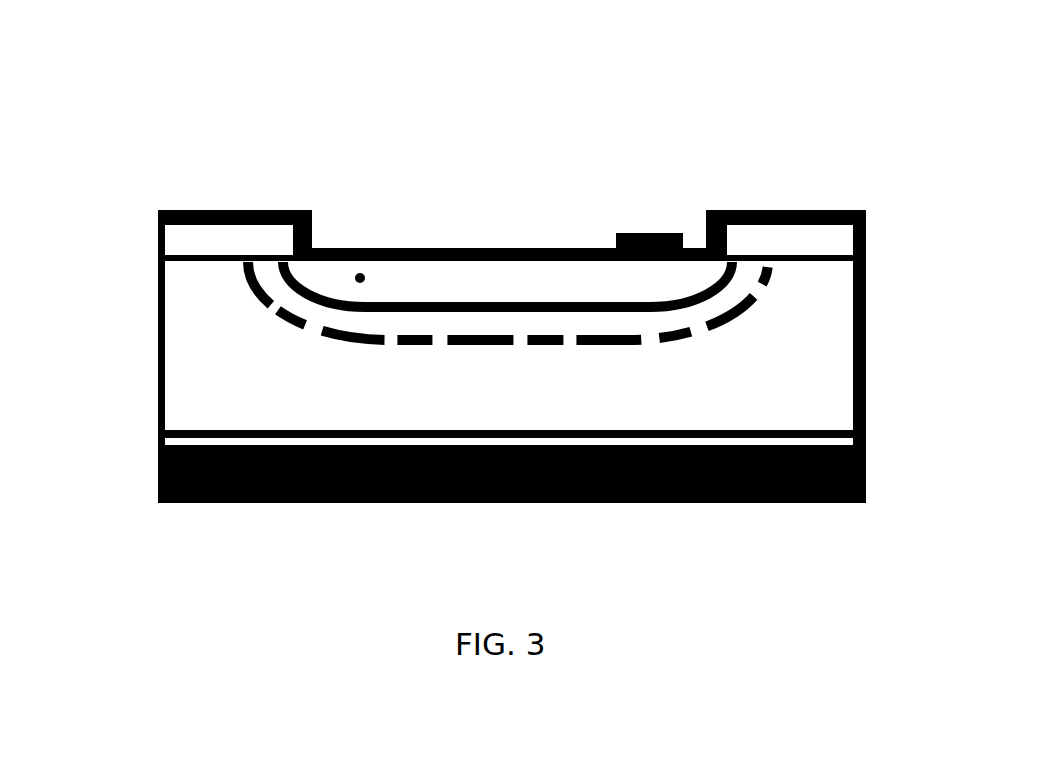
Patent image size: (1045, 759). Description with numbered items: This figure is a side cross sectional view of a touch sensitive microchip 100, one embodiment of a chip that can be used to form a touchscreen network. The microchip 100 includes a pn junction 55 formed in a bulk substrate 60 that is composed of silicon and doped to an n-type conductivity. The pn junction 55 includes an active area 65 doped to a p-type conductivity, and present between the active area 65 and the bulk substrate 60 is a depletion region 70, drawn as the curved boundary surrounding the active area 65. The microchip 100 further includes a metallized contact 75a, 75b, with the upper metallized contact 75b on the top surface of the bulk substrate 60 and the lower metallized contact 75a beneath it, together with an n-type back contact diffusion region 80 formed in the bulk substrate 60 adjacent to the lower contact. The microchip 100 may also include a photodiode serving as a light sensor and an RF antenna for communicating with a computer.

The microchip 100 is at (282, 147).
The pn junction 55 is at (747, 283).
The bulk substrate 60 is at (757, 377).
The active area 65 is at (366, 248).
The depletion region 70 is at (298, 301).
The metallized contact 75a is at (773, 503).
The metallized contact 75b is at (613, 230).
The n-type back contact diffusion region 80 is at (162, 445).